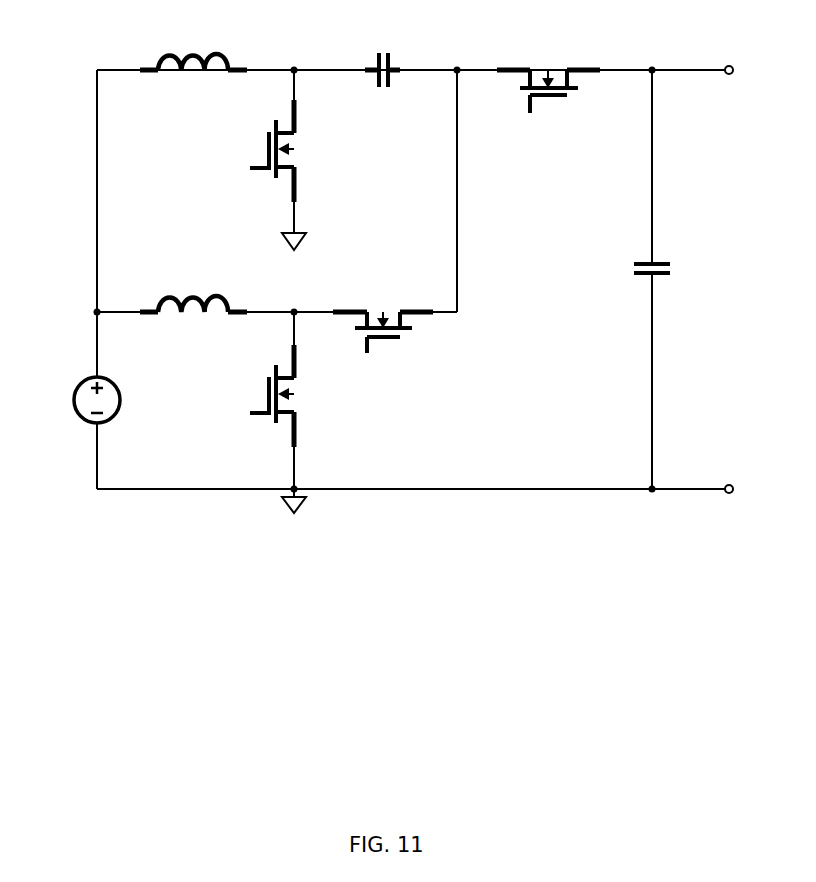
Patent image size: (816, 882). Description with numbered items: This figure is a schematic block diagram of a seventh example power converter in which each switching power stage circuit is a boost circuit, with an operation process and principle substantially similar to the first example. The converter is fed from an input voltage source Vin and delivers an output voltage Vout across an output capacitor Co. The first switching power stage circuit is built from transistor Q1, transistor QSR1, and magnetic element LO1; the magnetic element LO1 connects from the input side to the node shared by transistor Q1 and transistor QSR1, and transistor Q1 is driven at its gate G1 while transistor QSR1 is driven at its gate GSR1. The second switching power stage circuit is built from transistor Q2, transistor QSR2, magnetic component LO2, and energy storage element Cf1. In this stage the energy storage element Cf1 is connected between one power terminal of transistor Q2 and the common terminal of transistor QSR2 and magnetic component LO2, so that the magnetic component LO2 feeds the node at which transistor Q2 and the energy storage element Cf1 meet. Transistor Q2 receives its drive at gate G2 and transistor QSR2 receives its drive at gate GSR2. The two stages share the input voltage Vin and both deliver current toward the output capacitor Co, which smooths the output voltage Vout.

The magnetic component LO2 is at (193, 50).
The magnetic element LO1 is at (193, 292).
The energy storage element Cf1 is at (382, 57).
The transistor Q2 is at (301, 160).
The gate of Q2 G2 is at (242, 156).
The transistor Q1 is at (301, 412).
The gate of Q1 G1 is at (242, 401).
The transistor QSR1 is at (383, 302).
The gate of QSR1 GSR1 is at (384, 362).
The transistor QSR2 is at (548, 63).
The gate of QSR2 GSR2 is at (543, 122).
The output capacitor Co is at (634, 279).
The output voltage Vout is at (707, 271).
The input voltage source Vin is at (78, 400).